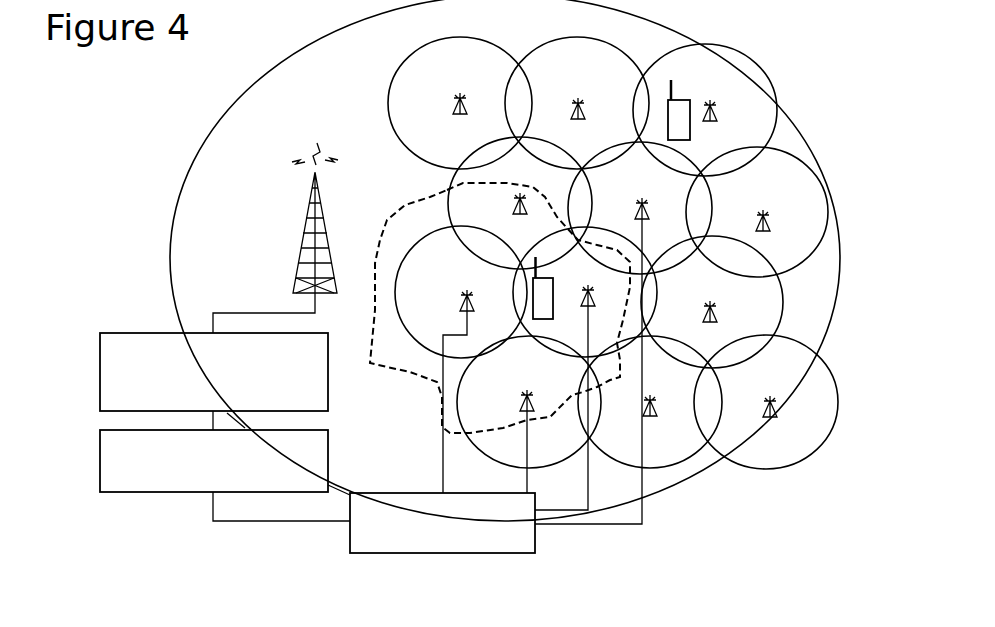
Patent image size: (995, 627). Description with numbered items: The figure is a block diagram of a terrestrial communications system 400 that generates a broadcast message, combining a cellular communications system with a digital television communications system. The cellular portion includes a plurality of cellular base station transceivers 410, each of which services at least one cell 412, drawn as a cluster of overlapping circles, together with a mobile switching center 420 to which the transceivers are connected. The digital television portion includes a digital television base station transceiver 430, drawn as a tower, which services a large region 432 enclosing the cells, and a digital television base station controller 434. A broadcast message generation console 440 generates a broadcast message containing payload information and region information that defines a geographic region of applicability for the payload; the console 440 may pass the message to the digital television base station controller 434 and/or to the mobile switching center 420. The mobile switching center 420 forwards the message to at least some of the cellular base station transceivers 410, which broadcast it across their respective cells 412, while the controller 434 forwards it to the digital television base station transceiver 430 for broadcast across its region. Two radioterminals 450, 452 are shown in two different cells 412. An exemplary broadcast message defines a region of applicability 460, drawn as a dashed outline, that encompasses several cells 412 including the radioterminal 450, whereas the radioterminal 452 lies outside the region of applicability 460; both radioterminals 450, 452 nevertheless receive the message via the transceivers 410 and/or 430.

The terrestrial communications system 400 is at (168, 100).
The cellular base station transceiver 410 is at (455, 100).
The cell 412 is at (388, 93).
The mobile switching center (MSC) 420 is at (443, 555).
The digital television base station transceiver 430 is at (305, 233).
The region 432 is at (180, 187).
The digital television base station controller 434 is at (98, 367).
The broadcast message generation console 440 is at (98, 458).
The radioterminal 450 is at (542, 280).
The radioterminal 452 is at (684, 100).
The region of applicability 460 is at (415, 203).